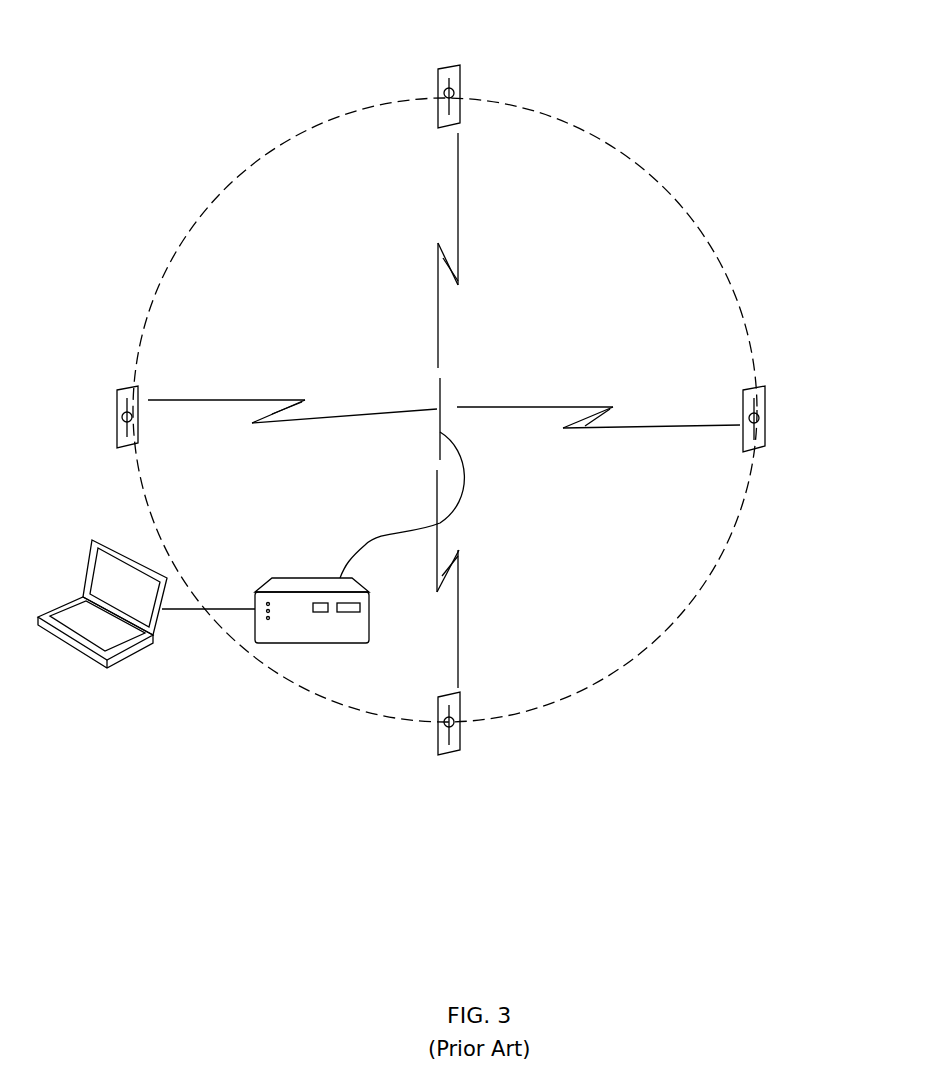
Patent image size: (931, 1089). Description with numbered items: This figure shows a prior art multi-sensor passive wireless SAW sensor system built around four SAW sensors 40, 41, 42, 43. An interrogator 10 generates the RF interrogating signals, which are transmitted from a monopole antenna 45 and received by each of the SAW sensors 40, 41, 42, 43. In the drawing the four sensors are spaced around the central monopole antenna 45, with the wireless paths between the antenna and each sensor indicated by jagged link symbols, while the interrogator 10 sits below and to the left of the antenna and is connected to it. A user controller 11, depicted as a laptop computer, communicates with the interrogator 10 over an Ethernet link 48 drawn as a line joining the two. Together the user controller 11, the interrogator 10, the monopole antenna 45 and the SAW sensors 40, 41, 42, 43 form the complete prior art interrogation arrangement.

The interrogator 10 is at (288, 578).
The user controller 11 is at (110, 543).
The SAW sensor 40 is at (447, 755).
The SAW sensor 41 is at (758, 385).
The SAW sensor 42 is at (447, 65).
The SAW sensor 43 is at (118, 387).
The monopole antenna 45 is at (443, 392).
The Ethernet link 48 is at (183, 610).